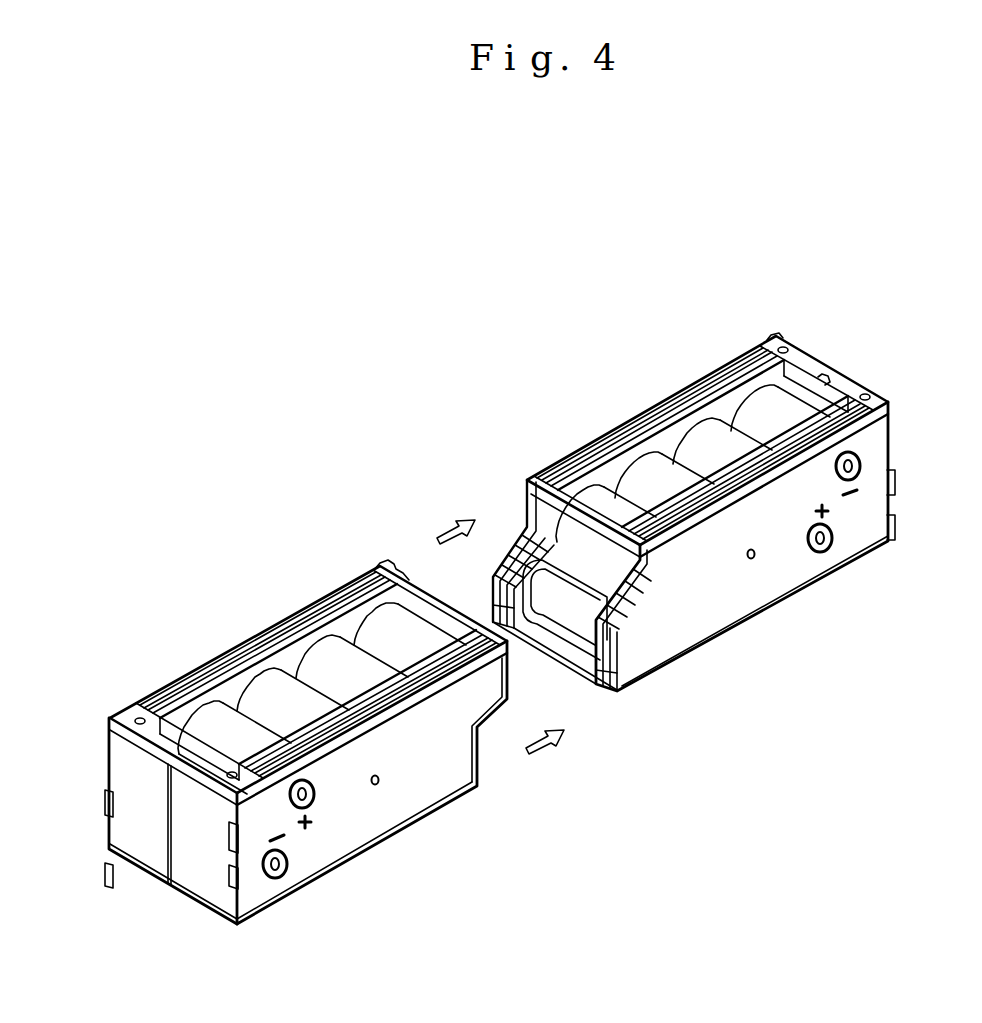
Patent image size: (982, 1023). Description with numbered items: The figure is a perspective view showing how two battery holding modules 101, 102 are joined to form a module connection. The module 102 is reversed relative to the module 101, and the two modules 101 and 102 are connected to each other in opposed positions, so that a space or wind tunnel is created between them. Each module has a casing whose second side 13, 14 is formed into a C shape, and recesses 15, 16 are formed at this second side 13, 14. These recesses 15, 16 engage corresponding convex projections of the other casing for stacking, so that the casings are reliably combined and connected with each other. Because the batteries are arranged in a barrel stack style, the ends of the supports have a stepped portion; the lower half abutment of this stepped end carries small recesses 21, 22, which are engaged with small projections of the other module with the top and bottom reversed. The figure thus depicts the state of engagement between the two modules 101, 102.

The module 101 is at (623, 564).
The module 102 is at (343, 732).
The second side 13 is at (343, 708).
The second side 14 is at (210, 670).
The recess 15 is at (498, 713).
The recess 16 is at (310, 600).
The small recess 21 is at (628, 690).
The small recess 22 is at (490, 607).